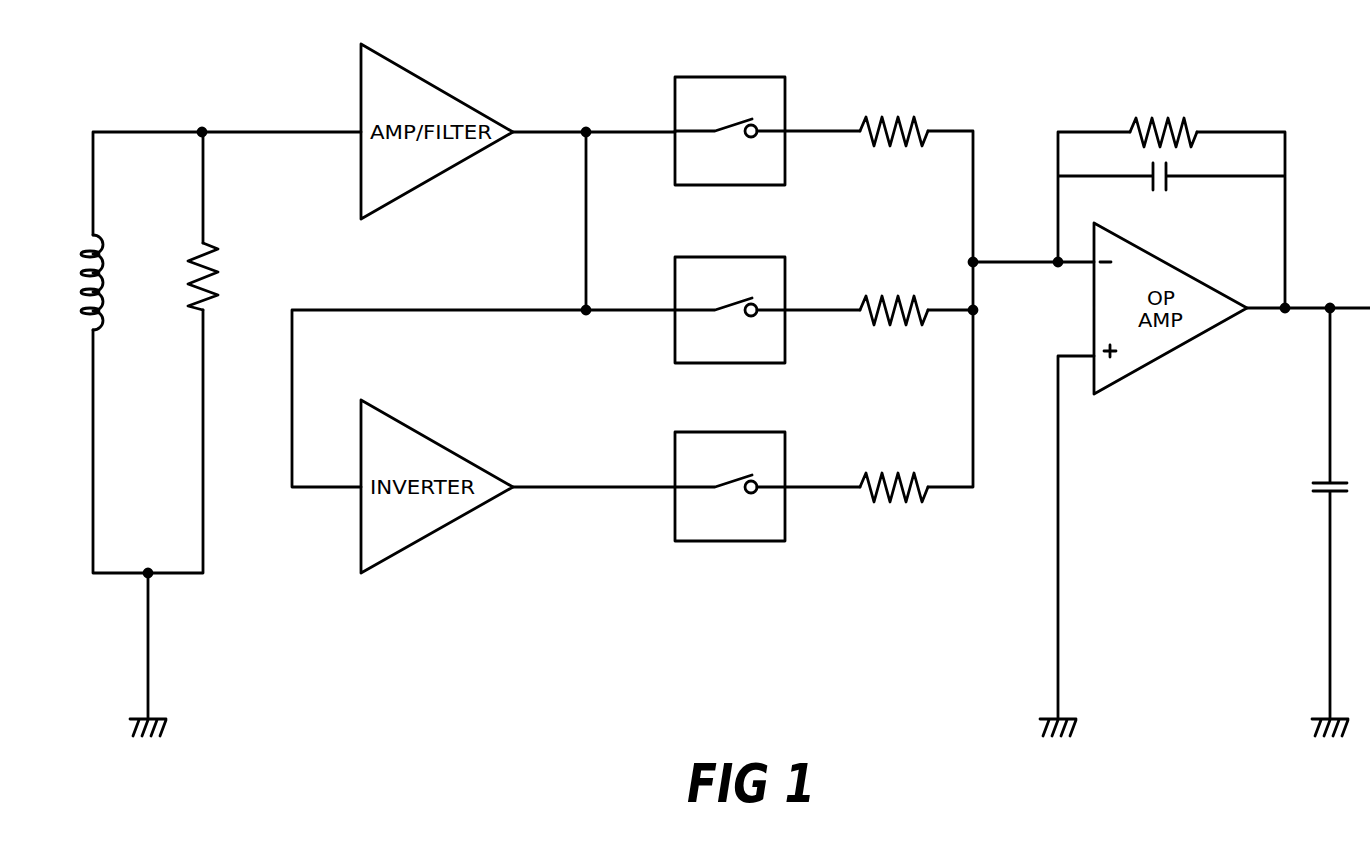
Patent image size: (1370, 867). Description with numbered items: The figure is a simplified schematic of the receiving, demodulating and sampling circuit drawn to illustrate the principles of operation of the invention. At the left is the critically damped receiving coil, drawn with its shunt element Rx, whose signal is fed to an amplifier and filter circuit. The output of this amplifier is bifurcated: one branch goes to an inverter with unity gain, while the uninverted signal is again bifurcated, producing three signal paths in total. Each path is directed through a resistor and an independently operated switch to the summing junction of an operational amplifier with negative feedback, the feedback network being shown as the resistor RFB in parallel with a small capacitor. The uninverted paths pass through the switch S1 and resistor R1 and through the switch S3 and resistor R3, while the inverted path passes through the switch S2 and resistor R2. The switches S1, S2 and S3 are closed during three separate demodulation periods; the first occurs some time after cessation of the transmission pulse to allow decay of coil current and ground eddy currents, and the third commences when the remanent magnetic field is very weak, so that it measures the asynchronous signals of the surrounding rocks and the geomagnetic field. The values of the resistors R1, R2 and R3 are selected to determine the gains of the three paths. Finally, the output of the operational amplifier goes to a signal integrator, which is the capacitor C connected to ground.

The sensing resistor / variable resistance element Rx is at (75, 282).
The switch S1 is at (730, 118).
The switch S2 is at (730, 474).
The switch S3 is at (730, 297).
The resistor R1 is at (894, 119).
The resistor R2 is at (894, 475).
The resistor R3 is at (894, 298).
The feedback resistor RFB is at (1163, 119).
The capacitor C is at (1339, 513).